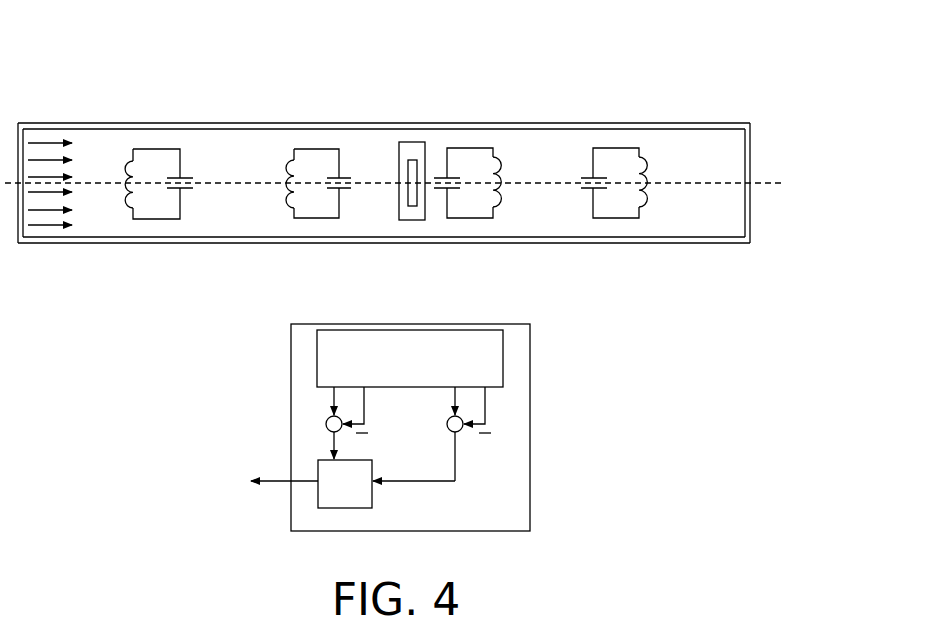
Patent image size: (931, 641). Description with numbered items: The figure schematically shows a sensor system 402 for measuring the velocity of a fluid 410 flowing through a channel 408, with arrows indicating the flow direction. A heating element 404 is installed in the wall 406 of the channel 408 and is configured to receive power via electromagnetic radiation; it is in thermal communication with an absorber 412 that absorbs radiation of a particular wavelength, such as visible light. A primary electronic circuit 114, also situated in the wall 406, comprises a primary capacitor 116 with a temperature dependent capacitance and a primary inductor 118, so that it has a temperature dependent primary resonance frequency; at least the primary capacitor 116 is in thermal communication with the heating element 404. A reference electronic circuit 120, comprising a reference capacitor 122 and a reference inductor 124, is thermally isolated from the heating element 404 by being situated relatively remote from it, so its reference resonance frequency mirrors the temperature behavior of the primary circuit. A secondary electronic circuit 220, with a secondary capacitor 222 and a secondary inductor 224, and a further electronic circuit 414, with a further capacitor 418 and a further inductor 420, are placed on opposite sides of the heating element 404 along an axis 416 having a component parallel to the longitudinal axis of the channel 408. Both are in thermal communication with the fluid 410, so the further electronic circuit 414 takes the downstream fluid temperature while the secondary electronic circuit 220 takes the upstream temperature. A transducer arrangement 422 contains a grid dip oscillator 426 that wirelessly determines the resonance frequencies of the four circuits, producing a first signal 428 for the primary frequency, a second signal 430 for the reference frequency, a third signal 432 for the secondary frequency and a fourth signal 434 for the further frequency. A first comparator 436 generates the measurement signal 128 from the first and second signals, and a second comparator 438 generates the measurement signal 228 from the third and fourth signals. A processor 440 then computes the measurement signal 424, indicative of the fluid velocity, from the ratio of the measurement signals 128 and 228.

The sensor system 402 is at (81, 43).
The wall 406 is at (100, 243).
The channel 408 is at (212, 123).
The fluid 410 is at (222, 161).
The axis 416 is at (762, 183).
The reference electronic circuit 120 is at (155, 219).
The reference capacitor 122 is at (185, 190).
The reference inductor 124 is at (130, 163).
The secondary electronic circuit 220 is at (313, 218).
The secondary capacitor 222 is at (347, 178).
The secondary inductor 224 is at (290, 201).
The heating element 404 is at (412, 147).
The absorber 412 is at (412, 206).
The further electronic circuit 414 is at (470, 148).
The further capacitor 418 is at (437, 189).
The further inductor 420 is at (500, 198).
The primary electronic circuit 114 is at (615, 218).
The primary capacitor 116 is at (588, 178).
The primary inductor 118 is at (643, 197).
The transducer arrangement 422 is at (530, 360).
The grid dip oscillator 426 is at (386, 371).
The first signal 428 is at (332, 398).
The second signal 430 is at (366, 425).
The third signal 432 is at (453, 395).
The fourth signal 434 is at (487, 406).
The first comparator 436 is at (326, 424).
The second comparator 438 is at (458, 431).
The measurement signal 128 is at (332, 445).
The processor 440 is at (326, 495).
The measurement signal 424 is at (275, 485).
The measurement signal 228 is at (403, 482).